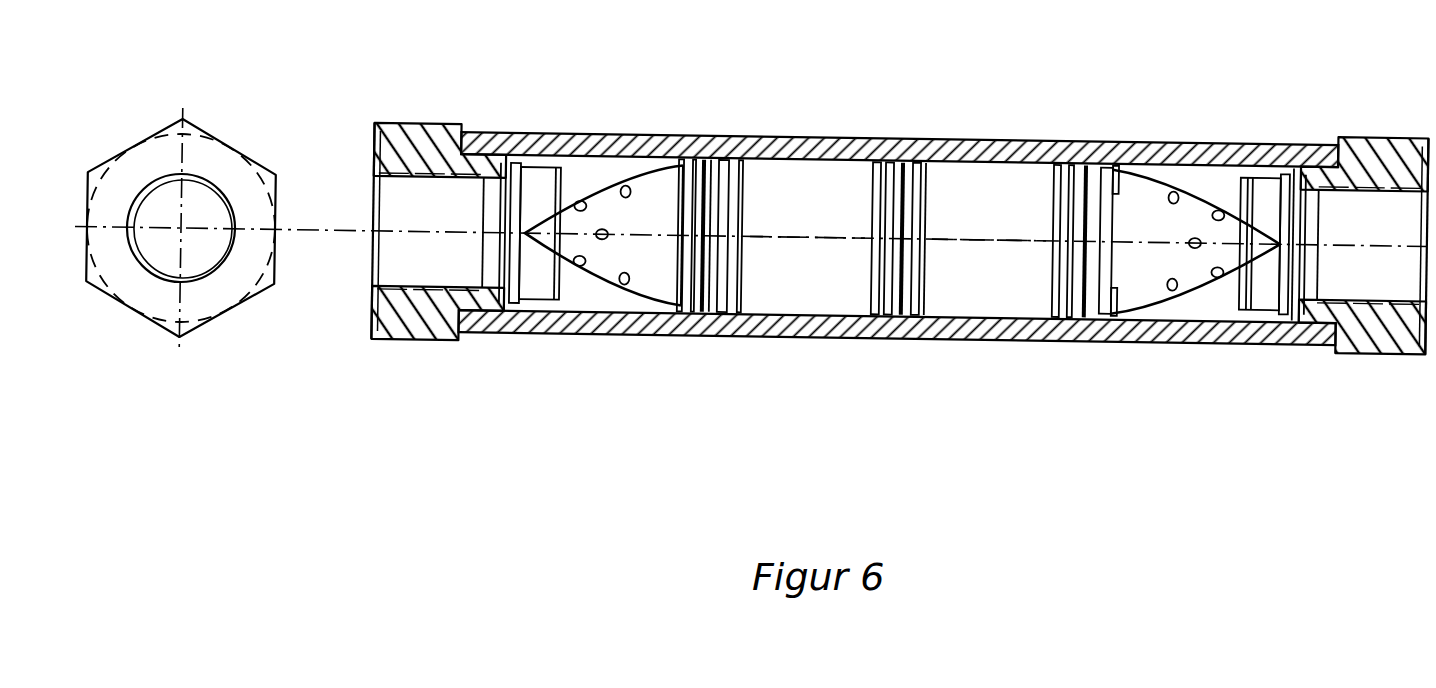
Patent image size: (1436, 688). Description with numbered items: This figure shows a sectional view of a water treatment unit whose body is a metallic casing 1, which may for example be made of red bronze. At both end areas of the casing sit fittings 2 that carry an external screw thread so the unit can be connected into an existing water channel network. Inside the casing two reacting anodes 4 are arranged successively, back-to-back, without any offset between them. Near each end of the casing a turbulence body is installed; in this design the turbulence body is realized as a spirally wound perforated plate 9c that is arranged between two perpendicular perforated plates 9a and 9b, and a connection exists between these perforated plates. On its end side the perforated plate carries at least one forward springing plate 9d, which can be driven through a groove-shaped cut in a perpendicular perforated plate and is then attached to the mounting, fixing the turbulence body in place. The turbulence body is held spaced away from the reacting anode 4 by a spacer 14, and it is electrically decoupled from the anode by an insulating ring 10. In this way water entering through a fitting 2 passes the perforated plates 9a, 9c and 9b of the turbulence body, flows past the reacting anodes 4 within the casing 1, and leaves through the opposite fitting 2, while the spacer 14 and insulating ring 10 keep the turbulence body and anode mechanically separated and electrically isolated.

The metallic casing 1 is at (1187, 340).
The fittings 2 is at (417, 340).
The reacting anode 4 is at (785, 282).
The perpendicular perforated plate 9a is at (505, 310).
The perpendicular perforated plate 9b is at (680, 312).
The spirally wound perforated plate 9c is at (655, 218).
The forward springing plate 9d is at (510, 223).
The insulating ring 10 is at (712, 300).
The spacer 14 is at (708, 157).